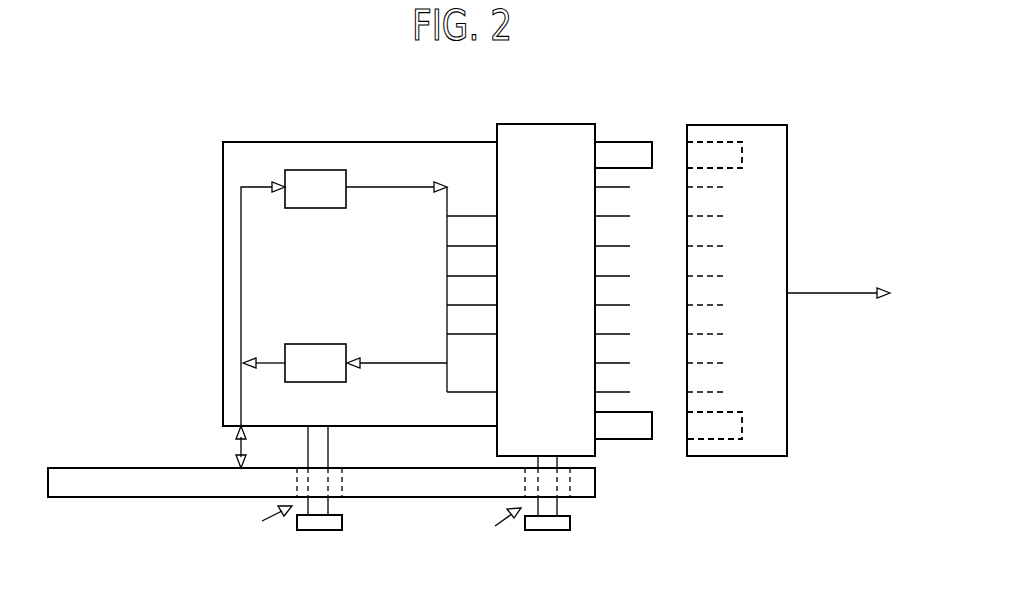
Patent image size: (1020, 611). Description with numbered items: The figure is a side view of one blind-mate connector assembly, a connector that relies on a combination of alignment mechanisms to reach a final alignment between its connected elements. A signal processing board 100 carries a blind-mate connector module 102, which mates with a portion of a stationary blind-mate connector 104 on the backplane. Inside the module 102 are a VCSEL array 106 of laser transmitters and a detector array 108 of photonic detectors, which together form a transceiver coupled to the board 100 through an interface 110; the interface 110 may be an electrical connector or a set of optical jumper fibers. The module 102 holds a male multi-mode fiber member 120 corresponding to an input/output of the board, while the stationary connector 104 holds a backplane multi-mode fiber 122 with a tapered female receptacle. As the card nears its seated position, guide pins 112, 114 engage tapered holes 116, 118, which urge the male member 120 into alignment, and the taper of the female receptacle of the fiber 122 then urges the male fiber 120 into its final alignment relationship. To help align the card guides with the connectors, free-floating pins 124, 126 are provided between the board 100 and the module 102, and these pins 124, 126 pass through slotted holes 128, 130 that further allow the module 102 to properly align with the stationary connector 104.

The signal processing board 100 is at (172, 497).
The connector module 102 is at (222, 283).
The stationary blind-mate connector 104 is at (768, 125).
The VCSEL array 106 is at (307, 170).
The detector array 108 is at (330, 382).
The interface 110 is at (237, 447).
The guide pin 112 is at (628, 142).
The guide pin 114 is at (628, 440).
The tapered hole 116 is at (718, 142).
The tapered hole 118 is at (710, 440).
The multi-mode fiber male member 120 is at (620, 187).
The multi-mode fiber 122 is at (710, 188).
The free-floating pin 124 is at (320, 531).
The free-floating pin 126 is at (548, 531).
The slotted hole 128 is at (260, 523).
The slotted hole 130 is at (489, 524).